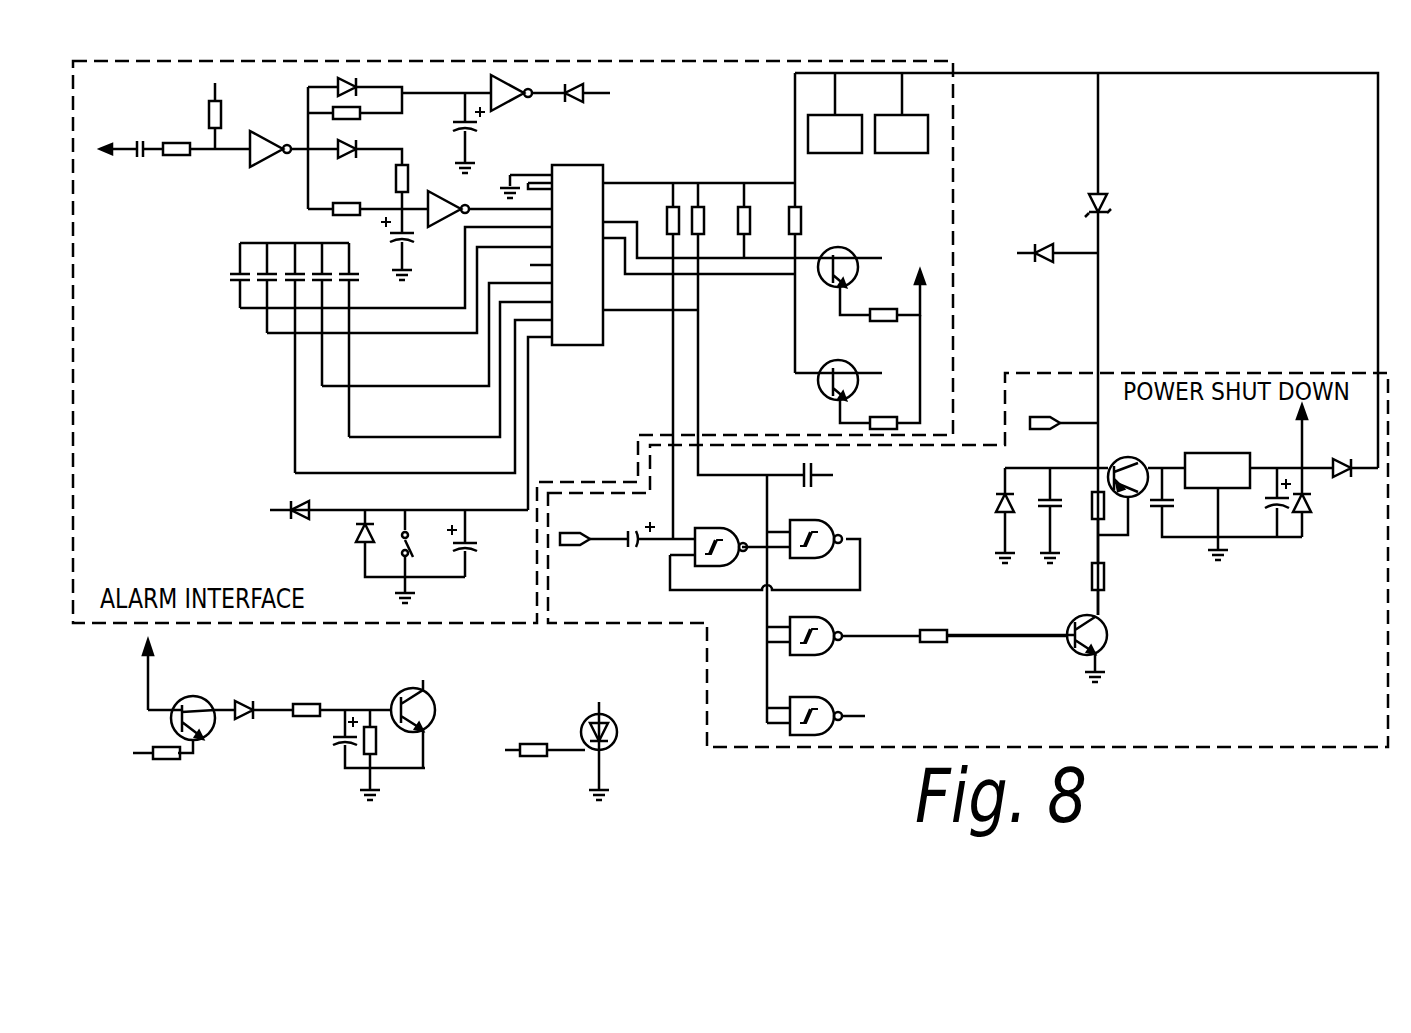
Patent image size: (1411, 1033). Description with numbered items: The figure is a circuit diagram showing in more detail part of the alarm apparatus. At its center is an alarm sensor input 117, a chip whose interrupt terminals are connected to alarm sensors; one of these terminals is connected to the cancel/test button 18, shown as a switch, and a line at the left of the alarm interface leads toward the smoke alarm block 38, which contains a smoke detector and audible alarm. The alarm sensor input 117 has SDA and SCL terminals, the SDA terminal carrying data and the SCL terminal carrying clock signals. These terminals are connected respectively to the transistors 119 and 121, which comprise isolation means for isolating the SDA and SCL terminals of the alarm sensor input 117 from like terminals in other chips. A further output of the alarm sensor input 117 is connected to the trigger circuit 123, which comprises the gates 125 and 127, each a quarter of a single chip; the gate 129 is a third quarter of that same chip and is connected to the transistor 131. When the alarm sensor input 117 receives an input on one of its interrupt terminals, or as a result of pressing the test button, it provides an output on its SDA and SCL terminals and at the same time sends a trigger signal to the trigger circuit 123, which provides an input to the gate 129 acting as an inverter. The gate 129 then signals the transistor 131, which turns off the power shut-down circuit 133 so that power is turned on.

The cancel/test button 18 is at (409, 550).
The smoke alarm block 38 is at (106, 135).
The alarm sensor input 117 is at (594, 182).
The transistor 119 is at (850, 276).
The transistor 121 is at (850, 389).
The trigger circuit 123 is at (884, 532).
The gate 125 is at (714, 527).
The gate 127 is at (818, 520).
The gate 129 is at (836, 618).
The transistor 131 is at (1108, 640).
The power shut-down circuit 133 is at (1268, 418).